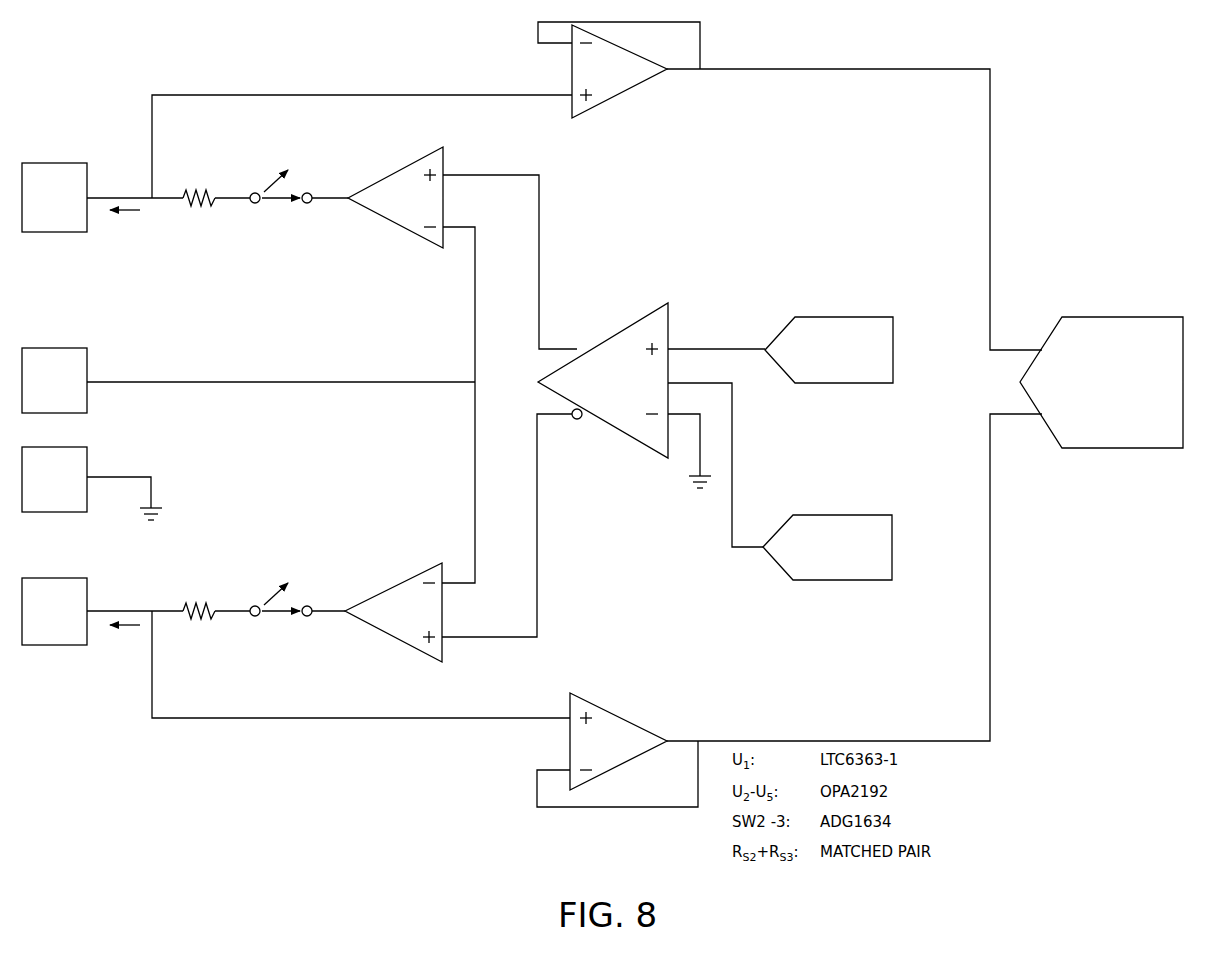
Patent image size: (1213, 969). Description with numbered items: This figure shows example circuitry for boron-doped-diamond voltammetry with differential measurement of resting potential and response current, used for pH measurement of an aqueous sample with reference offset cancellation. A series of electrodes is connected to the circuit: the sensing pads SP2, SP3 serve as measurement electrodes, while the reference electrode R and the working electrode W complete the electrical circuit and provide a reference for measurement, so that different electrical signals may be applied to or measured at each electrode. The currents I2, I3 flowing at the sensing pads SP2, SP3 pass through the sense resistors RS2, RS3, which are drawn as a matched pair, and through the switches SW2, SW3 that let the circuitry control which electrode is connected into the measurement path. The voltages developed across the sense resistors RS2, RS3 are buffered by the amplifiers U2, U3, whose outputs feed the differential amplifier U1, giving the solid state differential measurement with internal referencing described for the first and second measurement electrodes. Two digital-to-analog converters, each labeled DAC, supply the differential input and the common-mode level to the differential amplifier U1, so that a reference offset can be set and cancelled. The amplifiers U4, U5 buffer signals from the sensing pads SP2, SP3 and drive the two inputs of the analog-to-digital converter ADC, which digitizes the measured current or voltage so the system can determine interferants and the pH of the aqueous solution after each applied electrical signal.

The sense pad 2 SP2 is at (54, 197).
The sense pad 3 SP3 is at (54, 611).
The reference electrode R is at (54, 380).
The working electrode W is at (54, 479).
The current I2 is at (125, 230).
The current I3 is at (125, 644).
The sense resistor RS2 is at (197, 220).
The sense resistor RS3 is at (198, 592).
The switch SW2 is at (281, 208).
The switch SW3 is at (281, 619).
The differential amplifier U1 is at (603, 380).
The amplifier U2 is at (395, 213).
The amplifier U3 is at (393, 621).
The amplifier U4 is at (619, 78).
The amplifier U5 is at (617, 749).
The digital-to-analog converters DAC is at (836, 468).
The analog-to-digital converter ADC is at (1101, 382).